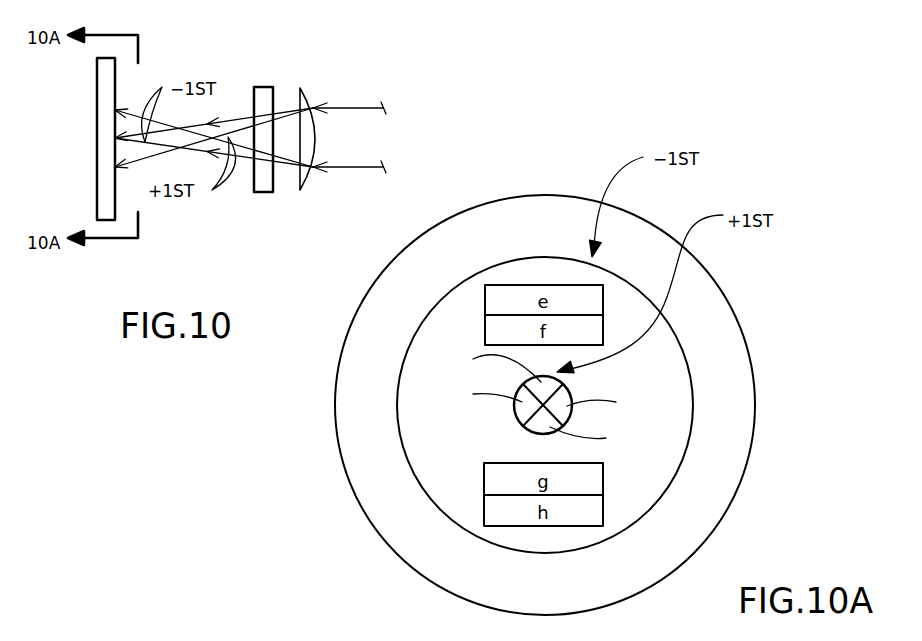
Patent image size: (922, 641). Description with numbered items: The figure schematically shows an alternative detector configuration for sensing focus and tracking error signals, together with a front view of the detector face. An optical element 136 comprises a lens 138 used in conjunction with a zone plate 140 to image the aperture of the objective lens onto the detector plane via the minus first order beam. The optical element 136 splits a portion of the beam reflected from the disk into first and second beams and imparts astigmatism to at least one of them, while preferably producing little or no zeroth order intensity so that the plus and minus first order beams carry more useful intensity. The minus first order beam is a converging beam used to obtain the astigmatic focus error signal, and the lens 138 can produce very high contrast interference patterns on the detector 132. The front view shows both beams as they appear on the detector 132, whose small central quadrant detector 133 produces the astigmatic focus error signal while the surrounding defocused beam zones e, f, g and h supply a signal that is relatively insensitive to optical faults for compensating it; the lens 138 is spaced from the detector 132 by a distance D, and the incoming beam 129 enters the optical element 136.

In FIG. 10, the detector 132 is at (97, 153).
In FIG. 10A, the detector 132 is at (551, 186).
In FIG. 10, the optical element 136 is at (318, 90).
In FIG. 10, the lens 138 is at (316, 137).
In FIG. 10, the zone plate 140 is at (262, 193).
In FIG. 10, the incoming light beam 129 is at (345, 108).
In FIG. 10A, the quadrant detector 133 is at (522, 422).